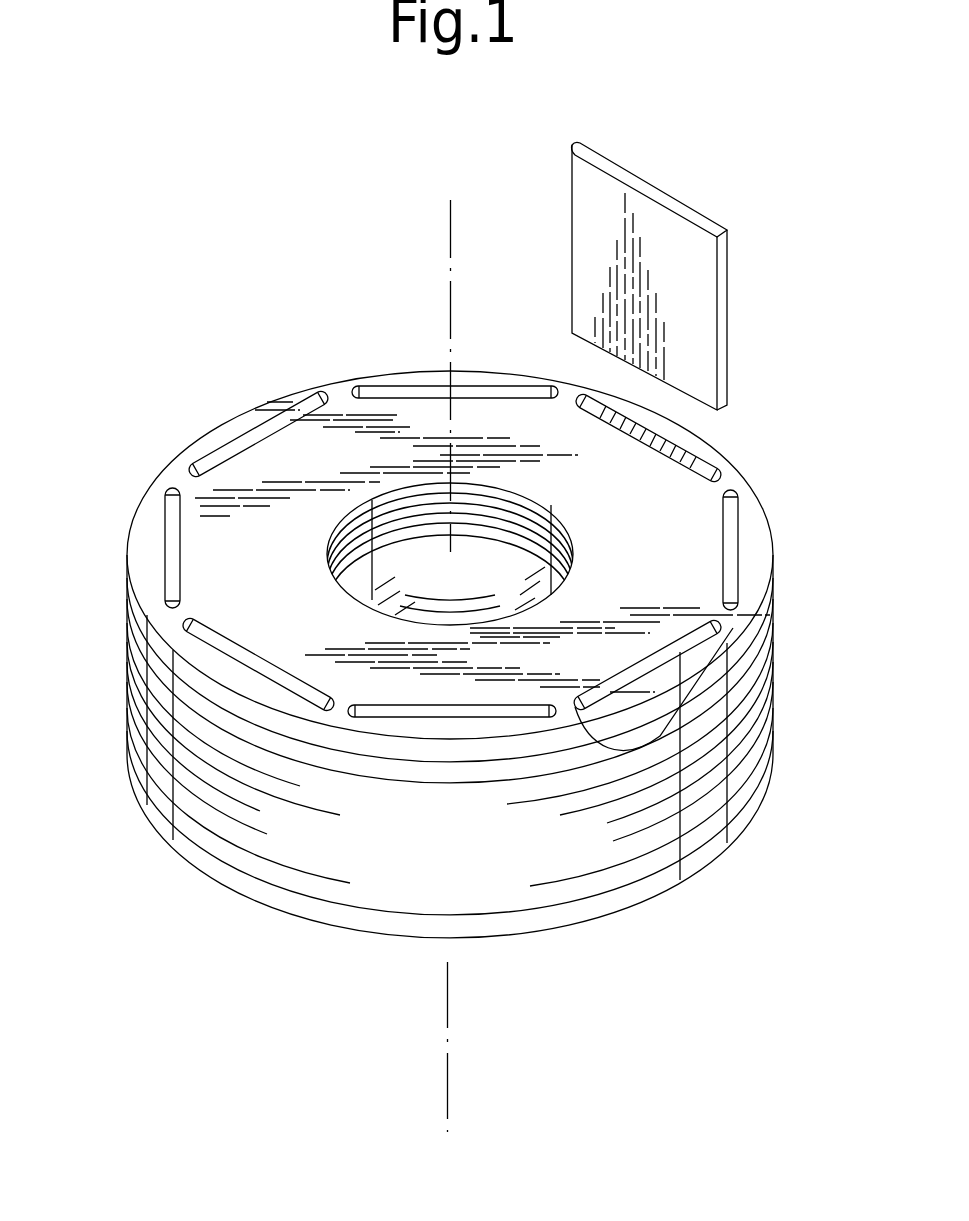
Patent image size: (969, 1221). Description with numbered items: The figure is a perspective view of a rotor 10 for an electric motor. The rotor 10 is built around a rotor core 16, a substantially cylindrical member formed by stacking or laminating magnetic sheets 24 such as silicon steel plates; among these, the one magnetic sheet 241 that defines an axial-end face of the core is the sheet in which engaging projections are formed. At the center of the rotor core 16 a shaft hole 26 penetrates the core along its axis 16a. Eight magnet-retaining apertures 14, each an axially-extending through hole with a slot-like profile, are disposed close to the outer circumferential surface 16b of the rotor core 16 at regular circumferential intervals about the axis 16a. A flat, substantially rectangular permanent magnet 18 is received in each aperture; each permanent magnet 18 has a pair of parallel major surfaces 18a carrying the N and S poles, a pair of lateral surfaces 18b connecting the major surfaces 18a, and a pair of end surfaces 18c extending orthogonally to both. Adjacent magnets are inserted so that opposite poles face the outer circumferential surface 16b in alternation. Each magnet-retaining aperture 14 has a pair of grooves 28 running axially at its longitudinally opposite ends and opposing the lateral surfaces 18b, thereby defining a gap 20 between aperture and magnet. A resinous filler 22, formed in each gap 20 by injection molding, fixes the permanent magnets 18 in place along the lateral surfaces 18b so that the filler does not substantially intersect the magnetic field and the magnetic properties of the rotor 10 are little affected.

The rotor 10 is at (227, 308).
The magnet-retaining apertures 14 is at (243, 655).
The rotor core 16 is at (217, 874).
The axis 16a is at (450, 223).
The outer circumferential surface 16b is at (568, 860).
The permanent magnets 18 is at (172, 531).
The major surfaces 18a is at (626, 158).
The lateral surfaces 18b is at (725, 255).
The end surfaces 18c is at (580, 140).
The gap 20 is at (180, 622).
The resinous filler 22 is at (700, 733).
The magnetic sheets 24 is at (697, 833).
The magnetic sheet 241 is at (308, 908).
The shaft hole 26 is at (380, 523).
The grooves 28 is at (578, 397).